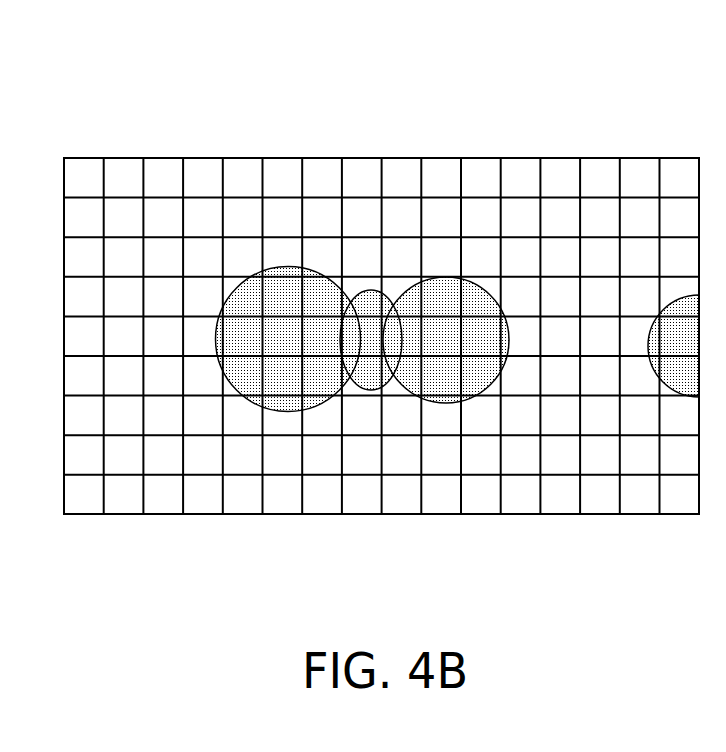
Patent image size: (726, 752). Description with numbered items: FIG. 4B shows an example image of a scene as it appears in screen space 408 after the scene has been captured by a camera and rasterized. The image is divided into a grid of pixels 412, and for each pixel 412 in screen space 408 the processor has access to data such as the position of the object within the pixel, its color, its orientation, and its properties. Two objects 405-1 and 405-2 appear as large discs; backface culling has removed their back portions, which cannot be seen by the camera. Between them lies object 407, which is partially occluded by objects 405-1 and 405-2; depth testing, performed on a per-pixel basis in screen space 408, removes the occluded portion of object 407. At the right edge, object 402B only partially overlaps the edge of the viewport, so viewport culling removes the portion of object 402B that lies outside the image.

The screen space 408 is at (356, 50).
The pixel 412 is at (83, 157).
The object 405-1 is at (290, 267).
The object 405-2 is at (482, 285).
The object 407 is at (366, 290).
The object 402B is at (695, 297).